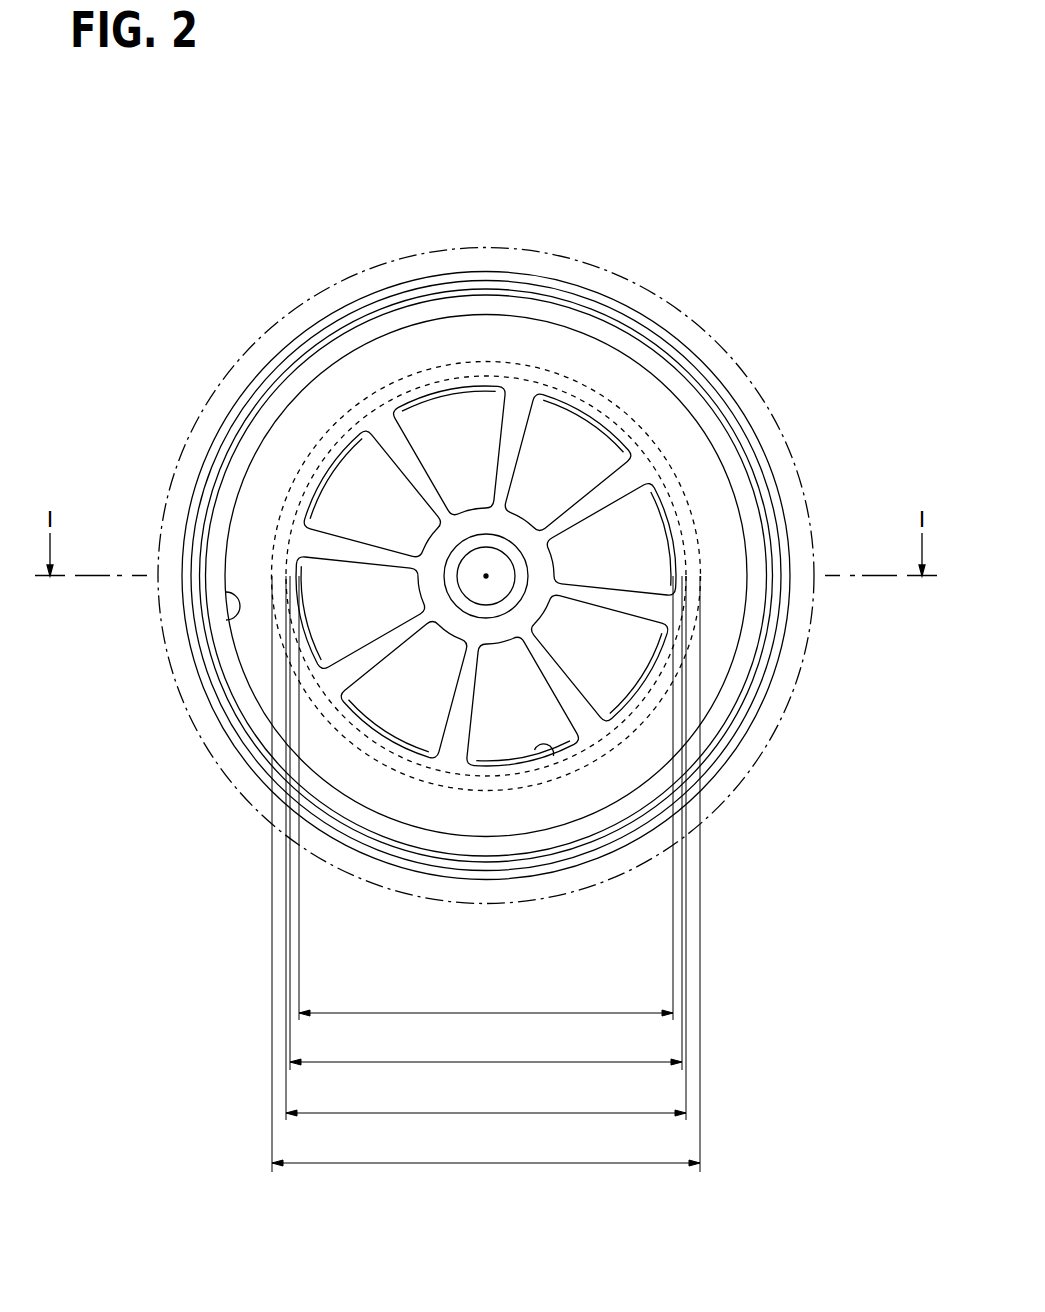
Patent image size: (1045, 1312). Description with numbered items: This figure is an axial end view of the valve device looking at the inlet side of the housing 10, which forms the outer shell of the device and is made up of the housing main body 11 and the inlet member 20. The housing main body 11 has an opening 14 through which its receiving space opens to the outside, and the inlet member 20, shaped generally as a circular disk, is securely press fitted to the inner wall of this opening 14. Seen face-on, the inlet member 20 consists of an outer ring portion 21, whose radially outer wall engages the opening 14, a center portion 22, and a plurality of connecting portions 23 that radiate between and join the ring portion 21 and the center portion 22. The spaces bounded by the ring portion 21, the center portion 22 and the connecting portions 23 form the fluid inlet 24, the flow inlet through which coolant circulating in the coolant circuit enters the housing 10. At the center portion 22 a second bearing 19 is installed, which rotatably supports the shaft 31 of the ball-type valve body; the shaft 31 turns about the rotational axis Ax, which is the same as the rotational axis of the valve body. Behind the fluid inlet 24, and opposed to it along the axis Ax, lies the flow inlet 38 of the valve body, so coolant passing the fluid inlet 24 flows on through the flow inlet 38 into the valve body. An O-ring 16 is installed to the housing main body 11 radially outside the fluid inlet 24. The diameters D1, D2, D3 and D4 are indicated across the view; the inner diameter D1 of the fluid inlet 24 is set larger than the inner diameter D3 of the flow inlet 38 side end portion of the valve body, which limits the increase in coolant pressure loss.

The housing 10 is at (489, 576).
The housing main body 11 is at (742, 388).
The opening 14 is at (228, 607).
The O-ring 16 is at (205, 689).
The second bearing 19 is at (547, 409).
The inlet member 20 is at (465, 558).
The ring portion 21 is at (344, 386).
The center portion 22 is at (482, 581).
The connecting portions 23 is at (352, 550).
The fluid inlet 24 is at (482, 581).
The shaft 31 is at (481, 560).
The flow inlet 38 is at (558, 750).
The rotational axis Ax is at (487, 575).
The inner diameter of the fluid inlet D1 is at (486, 1049).
The diameter D2 is at (486, 1150).
The inner diameter of the flow inlet side end portion D3 is at (486, 1000).
The diameter D4 is at (486, 1100).